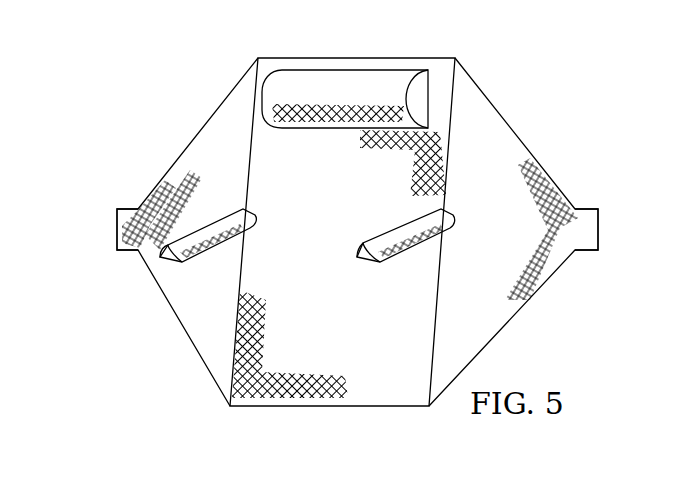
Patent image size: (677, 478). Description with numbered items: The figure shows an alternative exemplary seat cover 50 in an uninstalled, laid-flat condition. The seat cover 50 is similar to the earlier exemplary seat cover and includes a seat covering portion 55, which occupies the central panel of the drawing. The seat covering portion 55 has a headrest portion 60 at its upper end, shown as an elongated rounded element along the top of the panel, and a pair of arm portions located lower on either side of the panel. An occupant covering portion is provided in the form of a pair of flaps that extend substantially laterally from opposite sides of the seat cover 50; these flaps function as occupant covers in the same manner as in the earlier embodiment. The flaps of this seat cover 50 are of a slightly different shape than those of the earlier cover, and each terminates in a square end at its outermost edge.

The seat cover 50 is at (165, 66).
The seat covering portion 55 is at (400, 408).
The headrest portion 60 is at (333, 88).